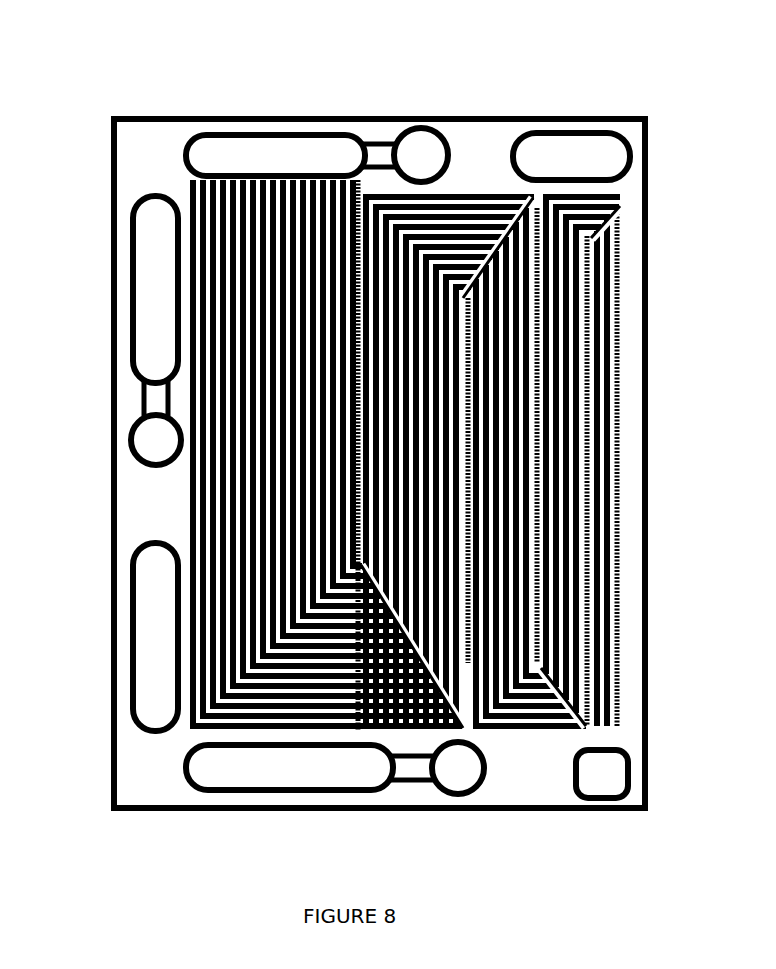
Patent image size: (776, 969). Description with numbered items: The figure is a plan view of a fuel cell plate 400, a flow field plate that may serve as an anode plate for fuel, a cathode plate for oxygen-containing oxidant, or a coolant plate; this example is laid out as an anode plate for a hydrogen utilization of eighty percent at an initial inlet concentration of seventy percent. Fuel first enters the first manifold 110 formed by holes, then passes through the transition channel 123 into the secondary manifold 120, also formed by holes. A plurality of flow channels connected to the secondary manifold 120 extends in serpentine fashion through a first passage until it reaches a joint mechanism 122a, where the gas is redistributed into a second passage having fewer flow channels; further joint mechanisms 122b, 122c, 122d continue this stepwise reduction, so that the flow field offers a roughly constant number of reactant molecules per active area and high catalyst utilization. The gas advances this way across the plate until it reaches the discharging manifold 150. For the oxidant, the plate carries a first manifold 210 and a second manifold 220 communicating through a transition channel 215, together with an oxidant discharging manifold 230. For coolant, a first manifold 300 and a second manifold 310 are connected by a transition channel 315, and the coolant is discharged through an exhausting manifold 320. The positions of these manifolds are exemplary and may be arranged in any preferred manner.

The fuel cell plate 400 is at (410, 43).
The secondary manifold 120 is at (265, 144).
The transition channel 123 is at (372, 136).
The first manifold 110 is at (418, 128).
The oxidant discharging manifold 230 is at (598, 128).
The joint mechanism 122a is at (462, 725).
The joint mechanism 122b is at (520, 222).
The joint mechanism 122c is at (575, 668).
The joint mechanism 122d is at (607, 203).
The second manifold 310 is at (140, 312).
The transition channel 315 is at (140, 390).
The first manifold 300 is at (140, 450).
The exhausting manifold 320 is at (140, 648).
The second manifold 220 is at (280, 768).
The transition channel 215 is at (405, 780).
The first manifold 210 is at (453, 767).
The discharging manifold 150 is at (598, 791).